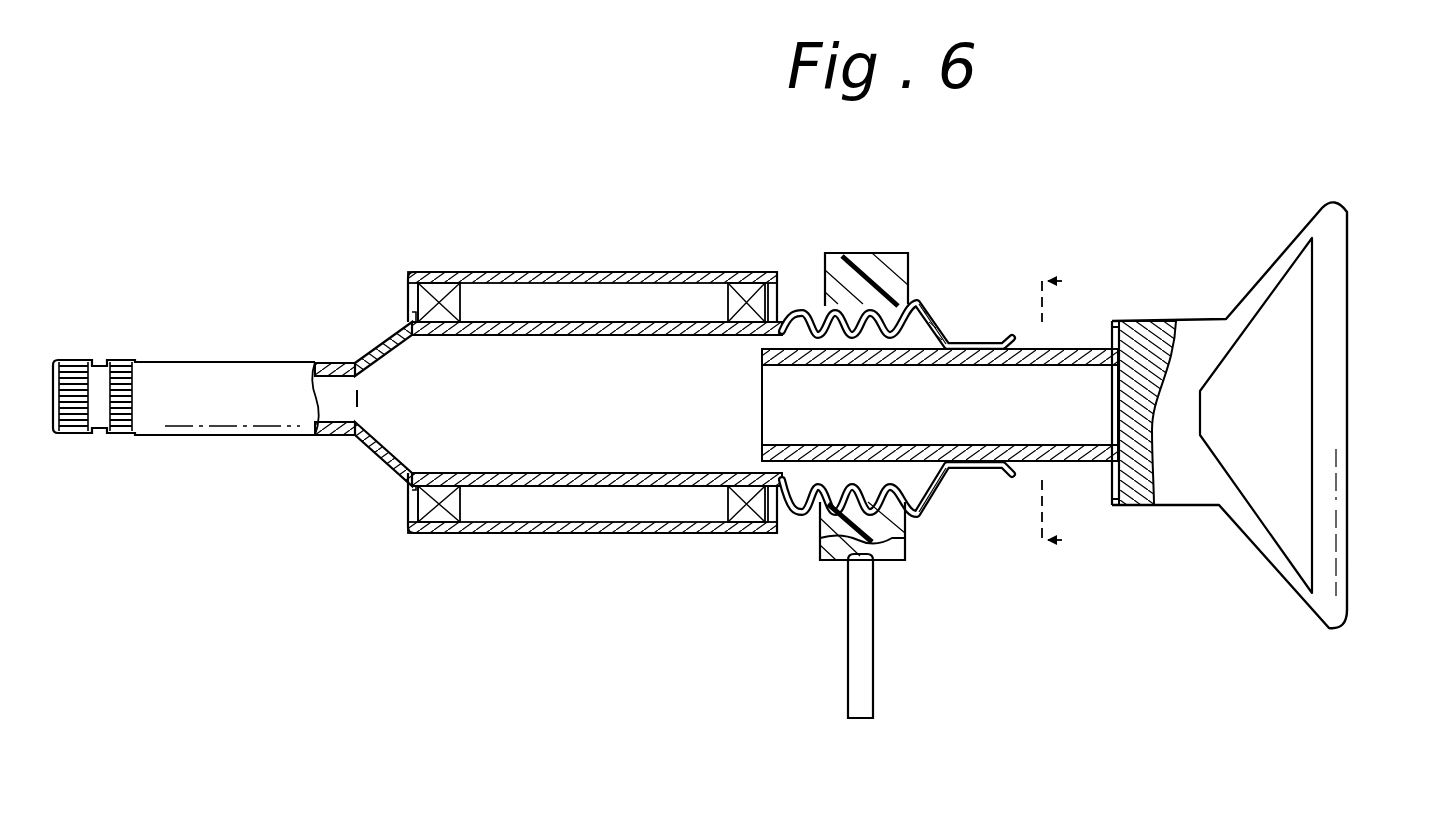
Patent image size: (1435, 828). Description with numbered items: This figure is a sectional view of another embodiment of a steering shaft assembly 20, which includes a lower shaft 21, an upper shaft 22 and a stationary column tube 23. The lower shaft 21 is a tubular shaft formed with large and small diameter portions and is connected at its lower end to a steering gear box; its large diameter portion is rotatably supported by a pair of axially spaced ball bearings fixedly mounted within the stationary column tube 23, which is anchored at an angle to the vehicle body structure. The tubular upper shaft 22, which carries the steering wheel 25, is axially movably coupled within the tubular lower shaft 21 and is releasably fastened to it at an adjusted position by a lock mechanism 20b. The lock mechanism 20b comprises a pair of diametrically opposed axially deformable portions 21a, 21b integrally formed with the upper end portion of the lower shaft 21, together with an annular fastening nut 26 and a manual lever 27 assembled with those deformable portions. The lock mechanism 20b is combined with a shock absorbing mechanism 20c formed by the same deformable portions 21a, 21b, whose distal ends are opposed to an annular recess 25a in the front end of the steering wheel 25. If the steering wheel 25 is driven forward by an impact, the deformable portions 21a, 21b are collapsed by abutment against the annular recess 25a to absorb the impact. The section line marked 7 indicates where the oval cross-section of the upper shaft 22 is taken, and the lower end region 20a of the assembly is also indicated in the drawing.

The steering shaft assembly 20 is at (1112, 240).
The tube 20a is at (247, 358).
The lock mechanism 20b is at (788, 248).
The shock absorbing mechanism 20c is at (886, 323).
The lower shaft 21 is at (228, 405).
The axially deformable portion 21a is at (948, 328).
The axially deformable portion 21b is at (942, 494).
The upper shaft 22 is at (1096, 501).
The stationary column tube 23 is at (601, 271).
The steering wheel 25 is at (1336, 247).
The annular recess 25a is at (1098, 322).
The annular fastening nut 26 is at (881, 254).
The manual lever 27 is at (868, 628).
The section line 7- 7 is at (1068, 416).